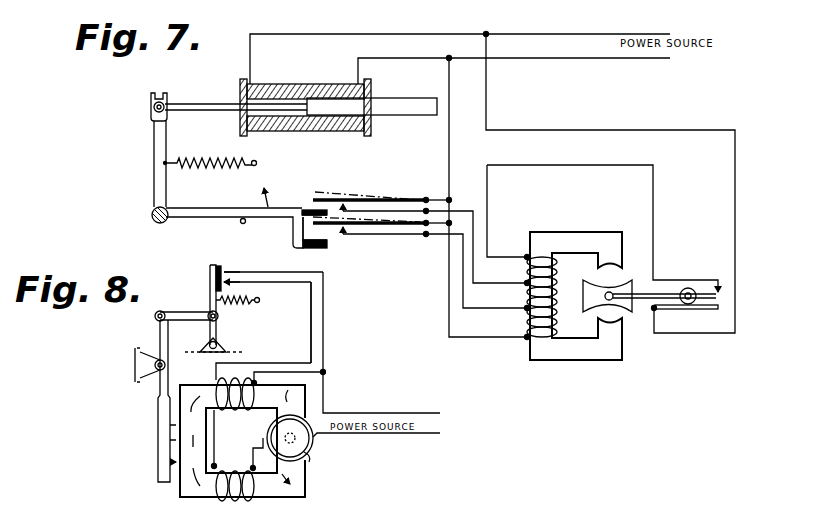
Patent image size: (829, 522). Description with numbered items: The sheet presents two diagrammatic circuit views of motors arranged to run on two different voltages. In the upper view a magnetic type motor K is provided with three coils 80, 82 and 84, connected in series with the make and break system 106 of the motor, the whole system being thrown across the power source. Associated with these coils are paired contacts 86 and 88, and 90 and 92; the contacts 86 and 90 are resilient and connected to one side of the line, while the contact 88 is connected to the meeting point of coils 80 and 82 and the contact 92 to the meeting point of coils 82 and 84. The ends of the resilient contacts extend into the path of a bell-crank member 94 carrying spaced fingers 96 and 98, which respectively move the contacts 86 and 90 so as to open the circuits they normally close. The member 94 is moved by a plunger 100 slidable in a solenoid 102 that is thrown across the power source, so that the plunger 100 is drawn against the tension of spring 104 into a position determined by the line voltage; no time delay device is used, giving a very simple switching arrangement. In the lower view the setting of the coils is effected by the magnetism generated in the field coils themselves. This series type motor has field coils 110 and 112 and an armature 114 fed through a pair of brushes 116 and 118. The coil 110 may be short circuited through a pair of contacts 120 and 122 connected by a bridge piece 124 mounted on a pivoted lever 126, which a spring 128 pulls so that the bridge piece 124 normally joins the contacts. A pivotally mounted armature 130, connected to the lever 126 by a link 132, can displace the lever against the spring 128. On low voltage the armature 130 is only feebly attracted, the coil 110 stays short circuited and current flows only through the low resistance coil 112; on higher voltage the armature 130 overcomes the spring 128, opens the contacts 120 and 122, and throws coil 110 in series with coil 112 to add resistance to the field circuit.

In FIG. 7, the coil 80 is at (557, 266).
In FIG. 7, the coil 82 is at (529, 298).
In FIG. 7, the coil 84 is at (557, 318).
In FIG. 7, the contact 86 is at (398, 199).
In FIG. 7, the contact 88 is at (408, 211).
In FIG. 7, the contact 90 is at (377, 228).
In FIG. 7, the contact 92 is at (419, 237).
In FIG. 7, the member 94 is at (259, 216).
In FIG. 7, the finger 96 is at (309, 198).
In FIG. 7, the finger 98 is at (311, 248).
In FIG. 7, the plunger 100 is at (202, 101).
In FIG. 7, the solenoid 102 is at (313, 82).
In FIG. 7, the spring 104 is at (205, 159).
In FIG. 7, the make and break system 106 is at (694, 313).
In FIG. 7, the motor K is at (602, 327).
In FIG. 8, the field coil 110 is at (227, 410).
In FIG. 8, the field coil 112 is at (221, 502).
In FIG. 8, the armature 114 is at (302, 445).
In FIG. 8, the brush 116 is at (262, 438).
In FIG. 8, the brush 118 is at (306, 456).
In FIG. 8, the contact 120 is at (230, 272).
In FIG. 8, the contact 122 is at (262, 276).
In FIG. 8, the bridge piece 124 is at (217, 266).
In FIG. 8, the pivoted lever 126 is at (209, 290).
In FIG. 8, the spring 128 is at (245, 302).
In FIG. 8, the armature 130 is at (161, 400).
In FIG. 8, the link 132 is at (186, 312).